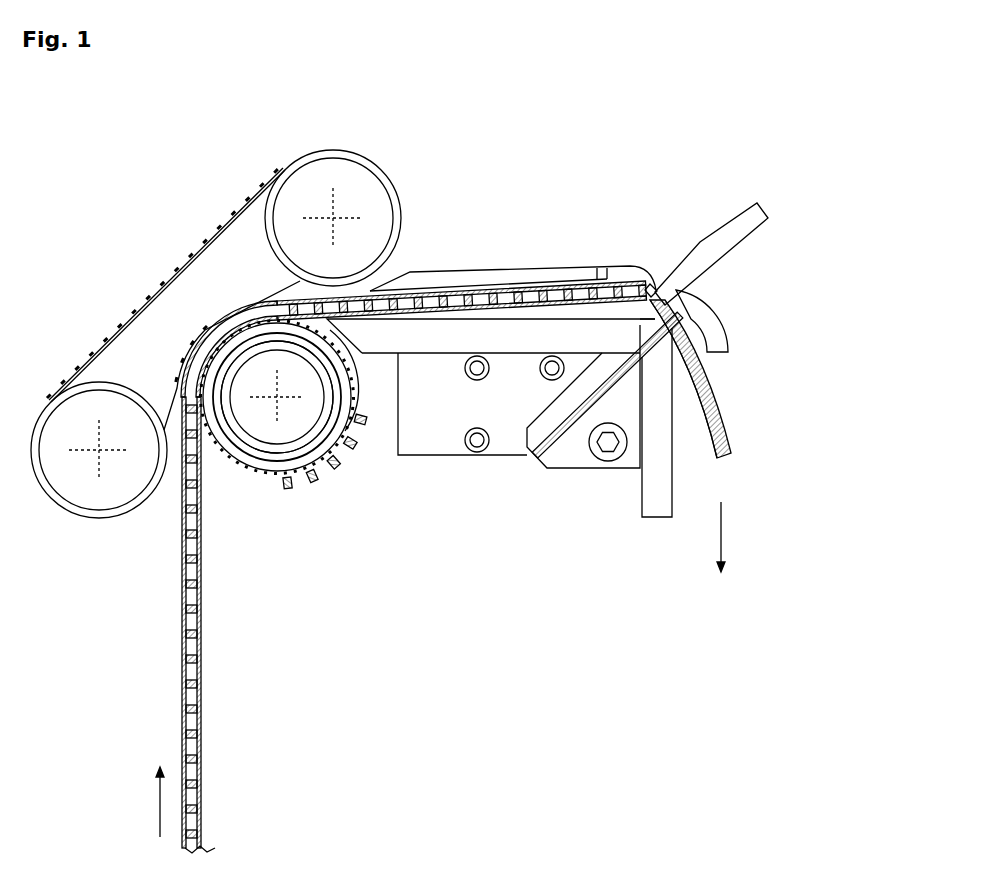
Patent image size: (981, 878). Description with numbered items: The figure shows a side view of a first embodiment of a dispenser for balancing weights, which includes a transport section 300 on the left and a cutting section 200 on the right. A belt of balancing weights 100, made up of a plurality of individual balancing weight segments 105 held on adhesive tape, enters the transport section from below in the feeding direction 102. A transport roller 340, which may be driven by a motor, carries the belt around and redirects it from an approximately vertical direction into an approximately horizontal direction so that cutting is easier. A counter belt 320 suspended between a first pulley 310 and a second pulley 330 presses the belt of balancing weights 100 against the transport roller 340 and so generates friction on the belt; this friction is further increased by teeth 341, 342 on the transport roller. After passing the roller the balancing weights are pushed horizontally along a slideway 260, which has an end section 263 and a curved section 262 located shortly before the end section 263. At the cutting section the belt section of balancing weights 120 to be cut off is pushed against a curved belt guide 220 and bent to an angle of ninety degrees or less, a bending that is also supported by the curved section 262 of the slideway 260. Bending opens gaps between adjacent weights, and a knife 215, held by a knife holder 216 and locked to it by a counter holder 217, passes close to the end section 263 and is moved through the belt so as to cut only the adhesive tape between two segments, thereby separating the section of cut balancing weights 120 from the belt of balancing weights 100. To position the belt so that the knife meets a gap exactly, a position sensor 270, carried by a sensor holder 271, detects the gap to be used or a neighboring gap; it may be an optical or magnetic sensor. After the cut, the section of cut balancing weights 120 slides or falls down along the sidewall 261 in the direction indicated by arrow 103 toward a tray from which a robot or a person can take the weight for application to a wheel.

The belt of balancing weights 100 is at (444, 285).
The feeding direction 102 is at (160, 808).
The arrow 103 is at (722, 528).
The balancing weight segments 105 is at (483, 291).
The section of cut balancing weights 120 is at (748, 444).
The cutting section 200 is at (619, 151).
The knife 215 is at (660, 368).
The knife holder 216 is at (575, 450).
The counter holder 217 is at (565, 398).
The curved belt guide 220 is at (715, 338).
The slideway 260 is at (438, 327).
The sidewall 261 is at (658, 497).
The curved section 262 is at (648, 314).
The end section 263 is at (640, 338).
The position sensor 270 is at (637, 268).
The sensor holder 271 is at (737, 228).
The transport section 300 is at (452, 151).
The first pulley 310 is at (336, 172).
The counter belt 320 is at (163, 292).
The second pulley 330 is at (100, 487).
The transport roller 340 is at (268, 427).
The teeth 341 is at (338, 443).
The teeth 342 is at (340, 436).